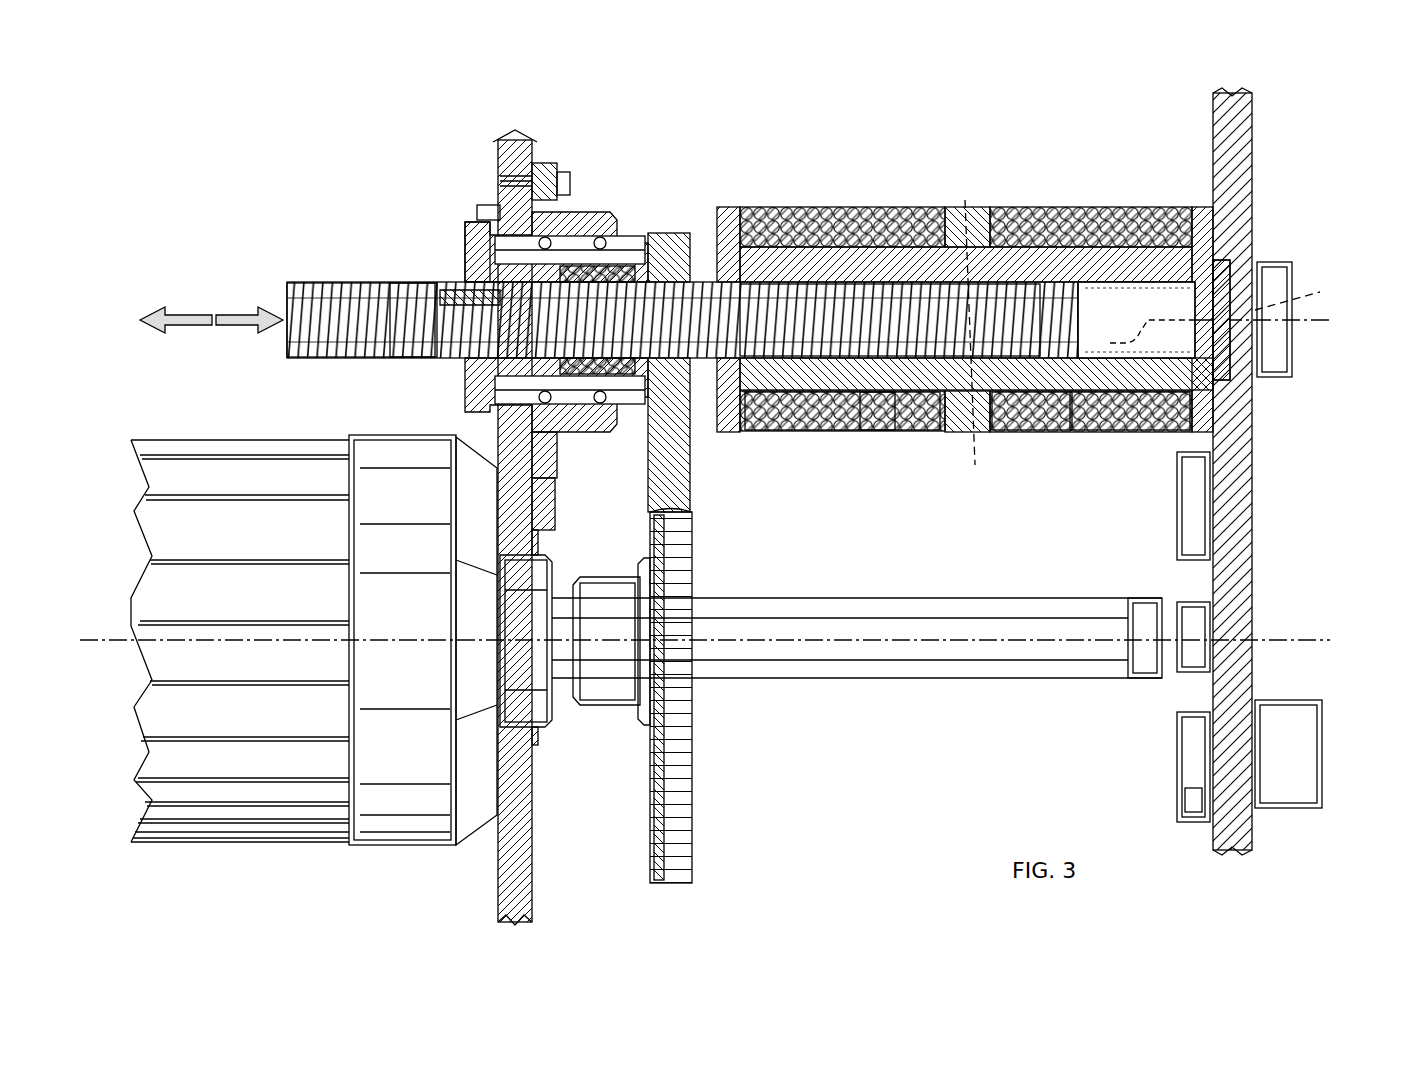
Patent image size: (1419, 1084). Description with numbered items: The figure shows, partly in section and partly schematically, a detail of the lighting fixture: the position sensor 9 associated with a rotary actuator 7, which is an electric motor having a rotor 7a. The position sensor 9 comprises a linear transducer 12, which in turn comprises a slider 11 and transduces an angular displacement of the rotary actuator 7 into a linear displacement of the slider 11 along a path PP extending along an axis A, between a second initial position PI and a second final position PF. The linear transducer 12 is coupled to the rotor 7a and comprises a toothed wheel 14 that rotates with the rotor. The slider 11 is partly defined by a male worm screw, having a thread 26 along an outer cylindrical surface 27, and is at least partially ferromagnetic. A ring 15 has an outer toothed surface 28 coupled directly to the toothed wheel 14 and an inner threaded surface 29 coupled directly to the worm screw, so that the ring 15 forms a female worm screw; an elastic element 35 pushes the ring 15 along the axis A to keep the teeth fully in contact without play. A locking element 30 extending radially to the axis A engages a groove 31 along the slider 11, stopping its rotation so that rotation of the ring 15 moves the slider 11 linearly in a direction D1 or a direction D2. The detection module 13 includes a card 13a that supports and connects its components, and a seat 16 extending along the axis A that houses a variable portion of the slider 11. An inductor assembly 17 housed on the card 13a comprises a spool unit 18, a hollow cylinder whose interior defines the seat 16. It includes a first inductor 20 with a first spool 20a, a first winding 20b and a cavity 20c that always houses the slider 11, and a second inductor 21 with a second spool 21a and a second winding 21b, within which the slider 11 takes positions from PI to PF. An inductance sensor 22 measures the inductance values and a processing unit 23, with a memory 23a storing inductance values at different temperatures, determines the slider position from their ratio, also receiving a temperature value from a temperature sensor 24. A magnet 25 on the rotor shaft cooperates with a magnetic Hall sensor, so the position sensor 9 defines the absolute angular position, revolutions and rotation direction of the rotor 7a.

The rotary actuator 7 is at (410, 795).
The rotor 7a is at (605, 680).
The position sensor 9 is at (1318, 190).
The slider 11 is at (799, 425).
The linear transducer 12 is at (556, 256).
The detection module 13 is at (1316, 471).
The card 13a is at (1250, 138).
The toothed wheel 14 is at (678, 747).
The ring 15 is at (640, 375).
The seat 16 is at (1160, 338).
The inductor assembly 17 is at (973, 288).
The spool unit 18 is at (965, 240).
The first inductor 20 is at (842, 313).
The first spool 20a is at (838, 400).
The first winding 20b is at (915, 400).
The cavity 20c is at (790, 305).
The second inductor 21 is at (1091, 305).
The second spool 21a is at (1008, 392).
The second winding 21b is at (1105, 415).
The inductance sensor 22 is at (1275, 340).
The processing unit 23 is at (1166, 767).
The memory 23a is at (1185, 805).
The temperature sensor 24 is at (1190, 505).
The magnet 25 is at (1150, 665).
The thread 26 is at (355, 365).
The outer cylindrical surface 27 is at (418, 365).
The outer toothed surface 28 is at (690, 222).
The inner threaded surface 29 is at (600, 292).
The locking element 30 is at (470, 245).
The groove 31 is at (455, 285).
The elastic element 35 is at (575, 290).
The direction D1 is at (232, 315).
The direction D2 is at (185, 315).
The second initial position PI is at (964, 320).
The path PP is at (1090, 300).
The second final position PF is at (1304, 296).
The axis A is at (1137, 338).